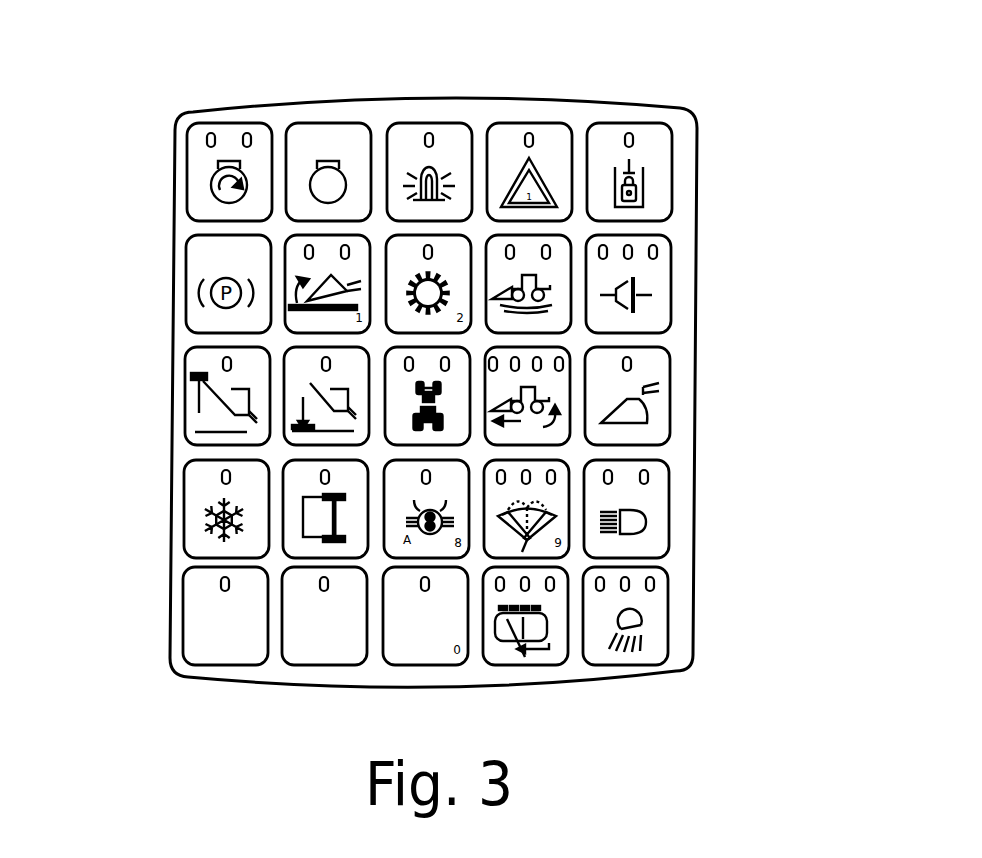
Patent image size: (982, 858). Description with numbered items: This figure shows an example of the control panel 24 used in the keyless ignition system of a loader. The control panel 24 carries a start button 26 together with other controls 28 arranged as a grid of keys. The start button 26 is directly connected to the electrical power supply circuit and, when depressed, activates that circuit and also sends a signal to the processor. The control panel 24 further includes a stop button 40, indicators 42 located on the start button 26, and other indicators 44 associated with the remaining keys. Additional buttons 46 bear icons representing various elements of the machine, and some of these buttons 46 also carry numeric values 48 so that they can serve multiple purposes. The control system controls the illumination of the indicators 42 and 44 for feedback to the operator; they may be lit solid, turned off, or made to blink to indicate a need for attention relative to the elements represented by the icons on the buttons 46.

The control panel 24 is at (168, 64).
The start button 26 is at (187, 183).
The controls 28 is at (104, 388).
The stop button 40 is at (330, 123).
The indicators 42 is at (246, 133).
The indicators 44 is at (429, 133).
The buttons 46 is at (672, 157).
The numeric values 48 is at (566, 319).